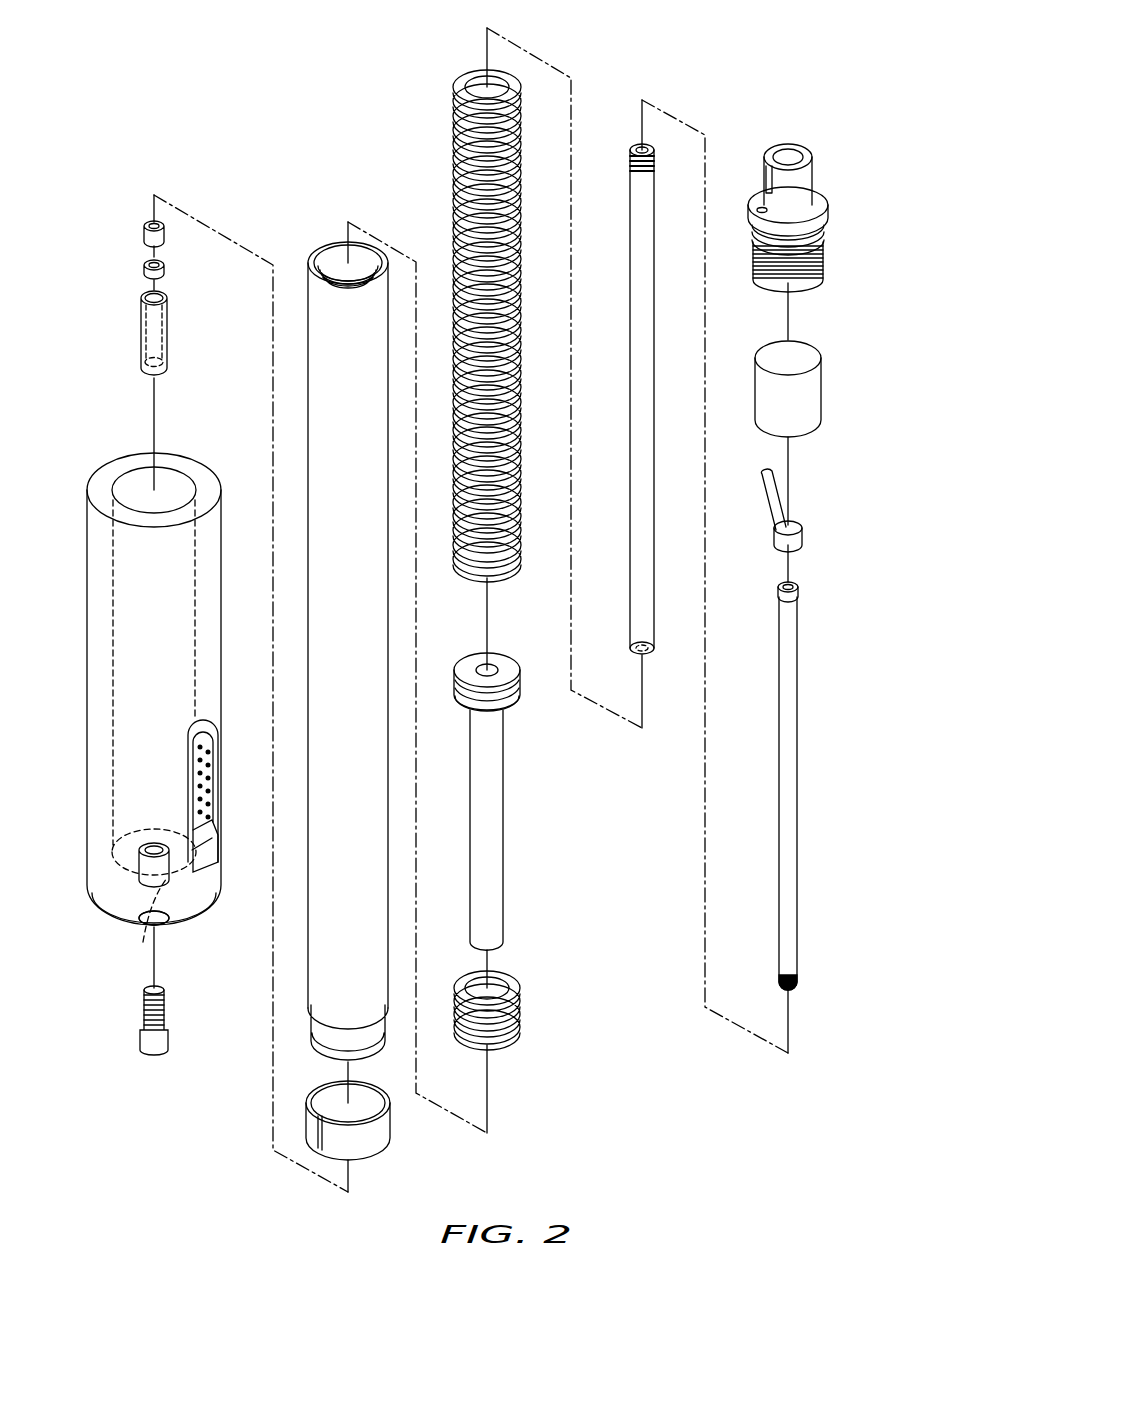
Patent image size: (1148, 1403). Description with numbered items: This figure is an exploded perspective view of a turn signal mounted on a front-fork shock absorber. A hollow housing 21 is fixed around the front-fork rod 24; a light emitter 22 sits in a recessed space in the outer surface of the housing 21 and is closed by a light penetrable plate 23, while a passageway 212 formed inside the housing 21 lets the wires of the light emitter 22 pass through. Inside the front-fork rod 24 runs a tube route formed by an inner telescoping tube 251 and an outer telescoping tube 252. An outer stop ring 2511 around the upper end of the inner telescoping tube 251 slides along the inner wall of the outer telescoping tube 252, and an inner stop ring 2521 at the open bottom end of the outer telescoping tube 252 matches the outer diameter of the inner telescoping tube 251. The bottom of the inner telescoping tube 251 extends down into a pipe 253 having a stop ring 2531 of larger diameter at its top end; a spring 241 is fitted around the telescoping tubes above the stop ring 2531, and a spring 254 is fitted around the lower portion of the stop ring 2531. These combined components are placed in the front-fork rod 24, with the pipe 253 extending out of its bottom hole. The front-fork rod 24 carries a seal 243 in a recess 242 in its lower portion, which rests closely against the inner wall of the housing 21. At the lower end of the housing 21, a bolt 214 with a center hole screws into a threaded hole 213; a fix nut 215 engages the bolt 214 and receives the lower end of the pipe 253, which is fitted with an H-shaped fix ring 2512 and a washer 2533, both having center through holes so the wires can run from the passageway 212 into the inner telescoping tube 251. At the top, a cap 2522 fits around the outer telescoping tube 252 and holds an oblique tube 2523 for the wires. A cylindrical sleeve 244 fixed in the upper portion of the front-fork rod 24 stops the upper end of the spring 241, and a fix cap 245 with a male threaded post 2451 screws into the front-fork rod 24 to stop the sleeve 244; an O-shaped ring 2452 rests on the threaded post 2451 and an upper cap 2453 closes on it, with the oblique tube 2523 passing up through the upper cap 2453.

The hollow housing 21 is at (200, 598).
The light emitter 22 is at (214, 762).
The light penetrable plate 23 is at (205, 832).
The front-fork rod 24 is at (325, 325).
The passageway 212 is at (180, 882).
The threaded hole 213 is at (132, 928).
The bolt 214 is at (160, 1040).
The fix nut 215 is at (166, 338).
The spring 241 is at (460, 178).
The recess 242 is at (340, 1030).
The seal 243 is at (390, 1128).
The cylindrical sleeve 244 is at (798, 396).
The fix cap 245 is at (848, 208).
The inner telescoping tube 251 is at (798, 749).
The outer telescoping tube 252 is at (636, 286).
The pipe 253 is at (505, 836).
The spring 254 is at (516, 990).
The male threaded post 2451 is at (808, 262).
The O-shaped ring 2452 is at (818, 236).
The upper cap 2453 is at (797, 200).
The outer stop ring 2511 is at (800, 591).
The H-shaped fix ring 2512 is at (145, 238).
The inner stop ring 2521 is at (655, 648).
The cap 2522 is at (797, 540).
The oblique tube 2523 is at (773, 491).
The stop ring 2531 is at (508, 668).
The washer 2533 is at (165, 270).